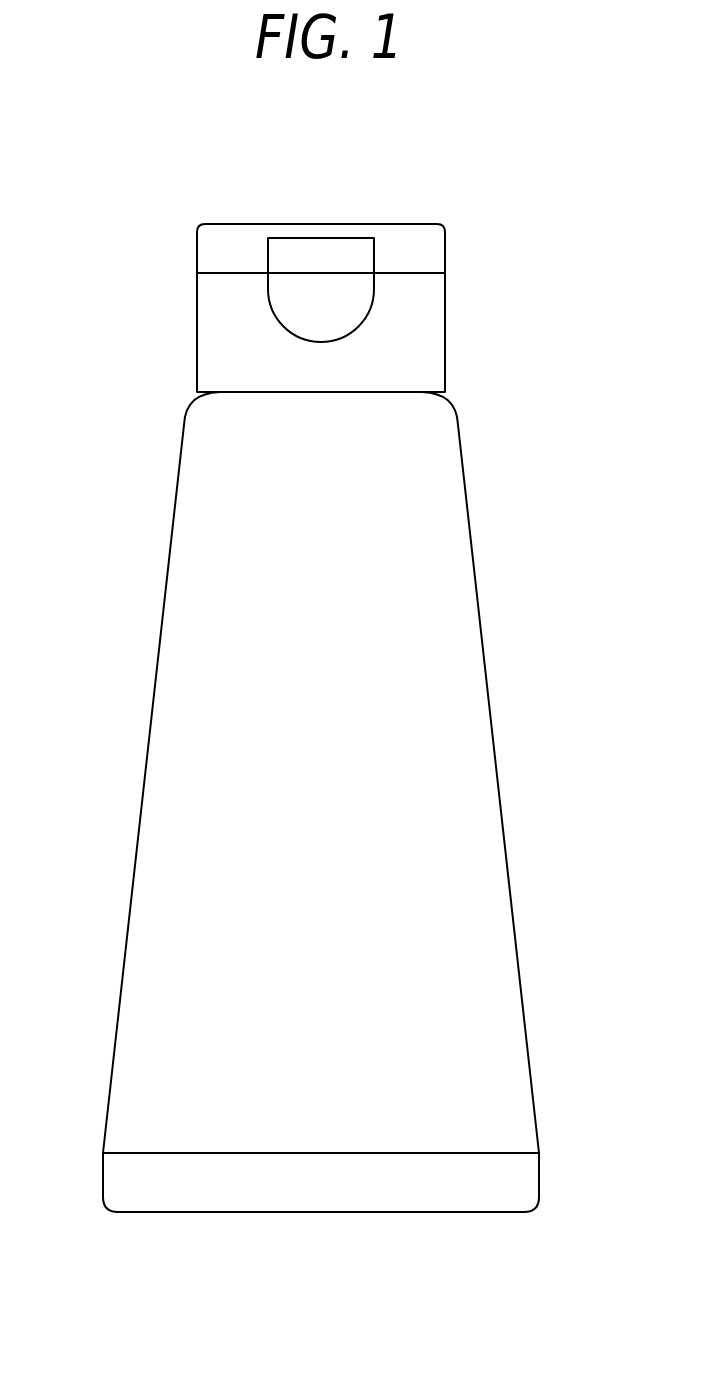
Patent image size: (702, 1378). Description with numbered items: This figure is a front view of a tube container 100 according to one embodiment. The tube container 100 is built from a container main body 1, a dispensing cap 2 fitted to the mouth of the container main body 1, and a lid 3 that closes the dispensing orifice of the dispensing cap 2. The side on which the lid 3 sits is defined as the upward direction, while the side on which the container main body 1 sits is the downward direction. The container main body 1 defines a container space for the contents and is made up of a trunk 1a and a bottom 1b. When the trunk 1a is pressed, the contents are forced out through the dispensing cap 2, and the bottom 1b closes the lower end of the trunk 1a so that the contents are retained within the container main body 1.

The tube container 100 is at (78, 303).
The container main body 1 is at (483, 562).
The trunk 1a is at (458, 728).
The bottom 1b is at (330, 1197).
The dispensing cap 2 is at (426, 335).
The lid 3 is at (426, 252).